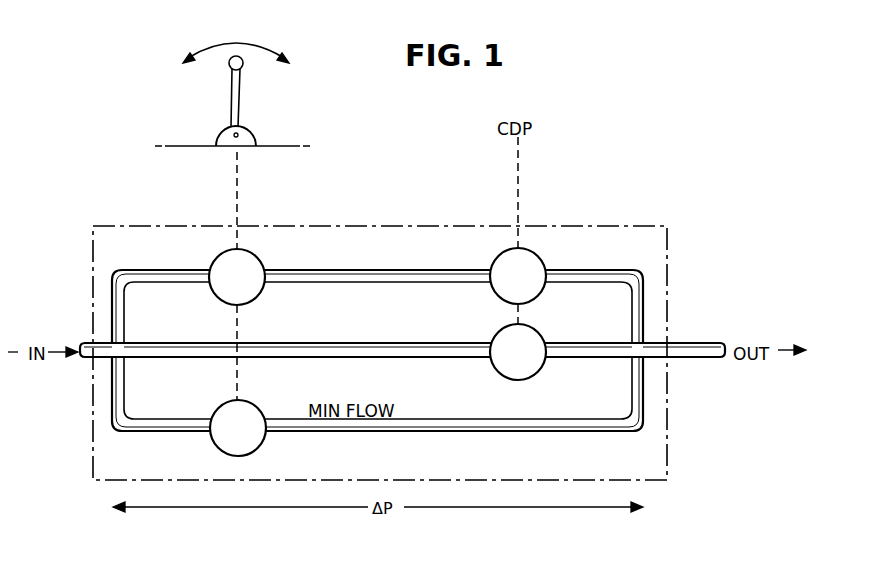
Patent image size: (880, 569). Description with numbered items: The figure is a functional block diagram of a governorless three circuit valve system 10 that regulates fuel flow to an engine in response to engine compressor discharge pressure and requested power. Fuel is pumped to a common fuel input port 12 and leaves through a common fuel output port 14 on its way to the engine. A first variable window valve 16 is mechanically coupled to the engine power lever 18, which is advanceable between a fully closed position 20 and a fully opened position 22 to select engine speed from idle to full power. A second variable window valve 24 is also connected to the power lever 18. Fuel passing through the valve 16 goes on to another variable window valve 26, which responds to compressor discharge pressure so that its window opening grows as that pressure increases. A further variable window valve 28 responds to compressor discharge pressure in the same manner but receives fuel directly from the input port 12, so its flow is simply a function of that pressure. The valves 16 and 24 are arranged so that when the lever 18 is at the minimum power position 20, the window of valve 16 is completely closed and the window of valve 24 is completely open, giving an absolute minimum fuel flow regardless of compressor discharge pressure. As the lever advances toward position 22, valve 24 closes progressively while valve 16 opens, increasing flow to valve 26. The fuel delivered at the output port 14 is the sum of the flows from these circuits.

The three circuit valve system 10 is at (365, 226).
The common fuel input port 12 is at (91, 341).
The common fuel output port 14 is at (703, 336).
The first variable window valve 16 is at (262, 262).
The engine power lever 18 is at (243, 121).
The fully closed position 20 is at (207, 64).
The fully opened position 22 is at (313, 78).
The second variable window valve 24 is at (260, 412).
The variable window valve 26 is at (541, 262).
The variable window valve 28 is at (541, 340).